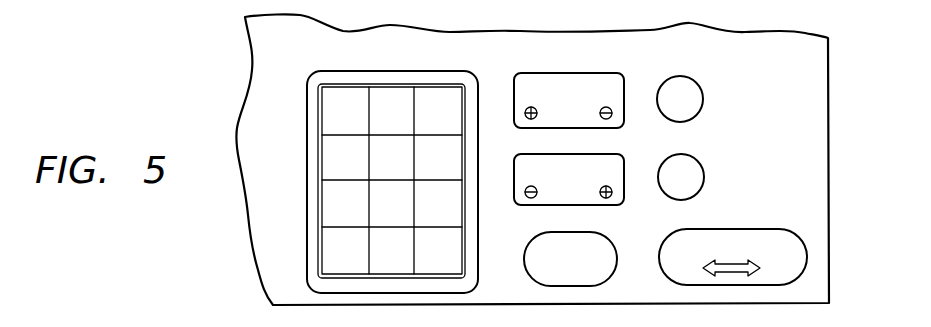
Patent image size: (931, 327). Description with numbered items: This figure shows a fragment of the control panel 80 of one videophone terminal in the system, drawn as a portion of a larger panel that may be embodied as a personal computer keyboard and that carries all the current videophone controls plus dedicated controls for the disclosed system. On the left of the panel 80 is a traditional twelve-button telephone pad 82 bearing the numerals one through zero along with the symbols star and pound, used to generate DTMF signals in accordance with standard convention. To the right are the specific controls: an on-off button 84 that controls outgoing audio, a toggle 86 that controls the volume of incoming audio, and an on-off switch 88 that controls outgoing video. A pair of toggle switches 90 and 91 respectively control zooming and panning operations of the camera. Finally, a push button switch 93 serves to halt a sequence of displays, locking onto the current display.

The panel 80 is at (270, 69).
The twelve-button telephone pad 82 is at (312, 183).
The on-off button 84 is at (698, 81).
The toggle 86 is at (535, 73).
The on-off switch 88 is at (682, 154).
The toggle switch 90 is at (596, 205).
The toggle switch 91 is at (770, 229).
The push button switch 93 is at (551, 231).